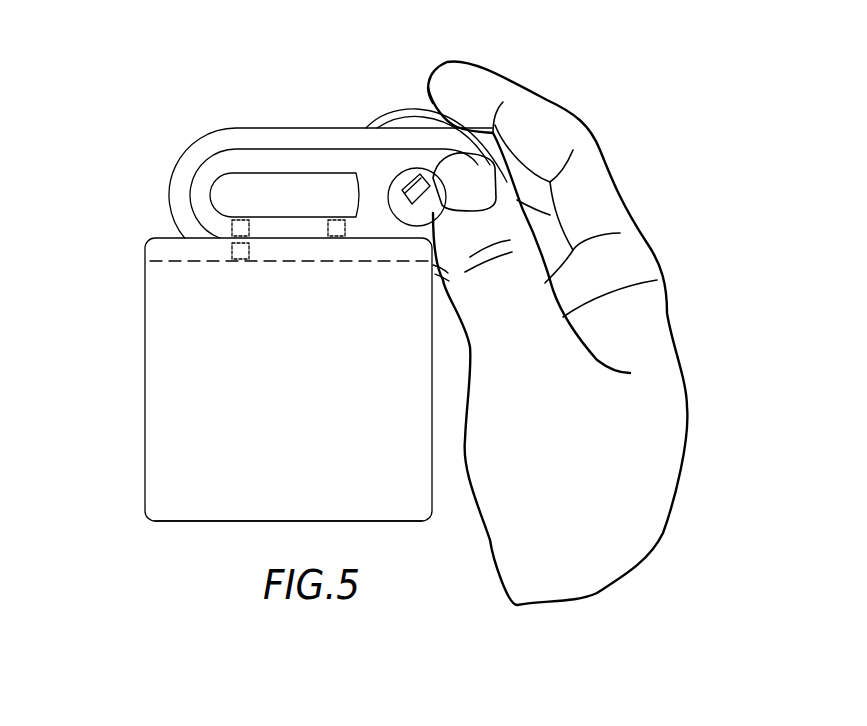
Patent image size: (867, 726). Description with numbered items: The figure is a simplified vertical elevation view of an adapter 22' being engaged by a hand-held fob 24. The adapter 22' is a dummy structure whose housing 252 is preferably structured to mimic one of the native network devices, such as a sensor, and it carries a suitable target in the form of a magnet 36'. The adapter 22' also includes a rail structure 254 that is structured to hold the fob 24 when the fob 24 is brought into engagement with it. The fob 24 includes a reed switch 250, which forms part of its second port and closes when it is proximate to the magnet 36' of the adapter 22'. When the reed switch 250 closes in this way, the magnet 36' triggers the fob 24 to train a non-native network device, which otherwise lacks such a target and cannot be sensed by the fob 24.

The fob 24 is at (283, 127).
The reed switch 250 is at (232, 227).
The rail structure 254 is at (183, 261).
The magnet 36' is at (257, 278).
The adapter 22' is at (244, 379).
The housing 252 is at (182, 523).